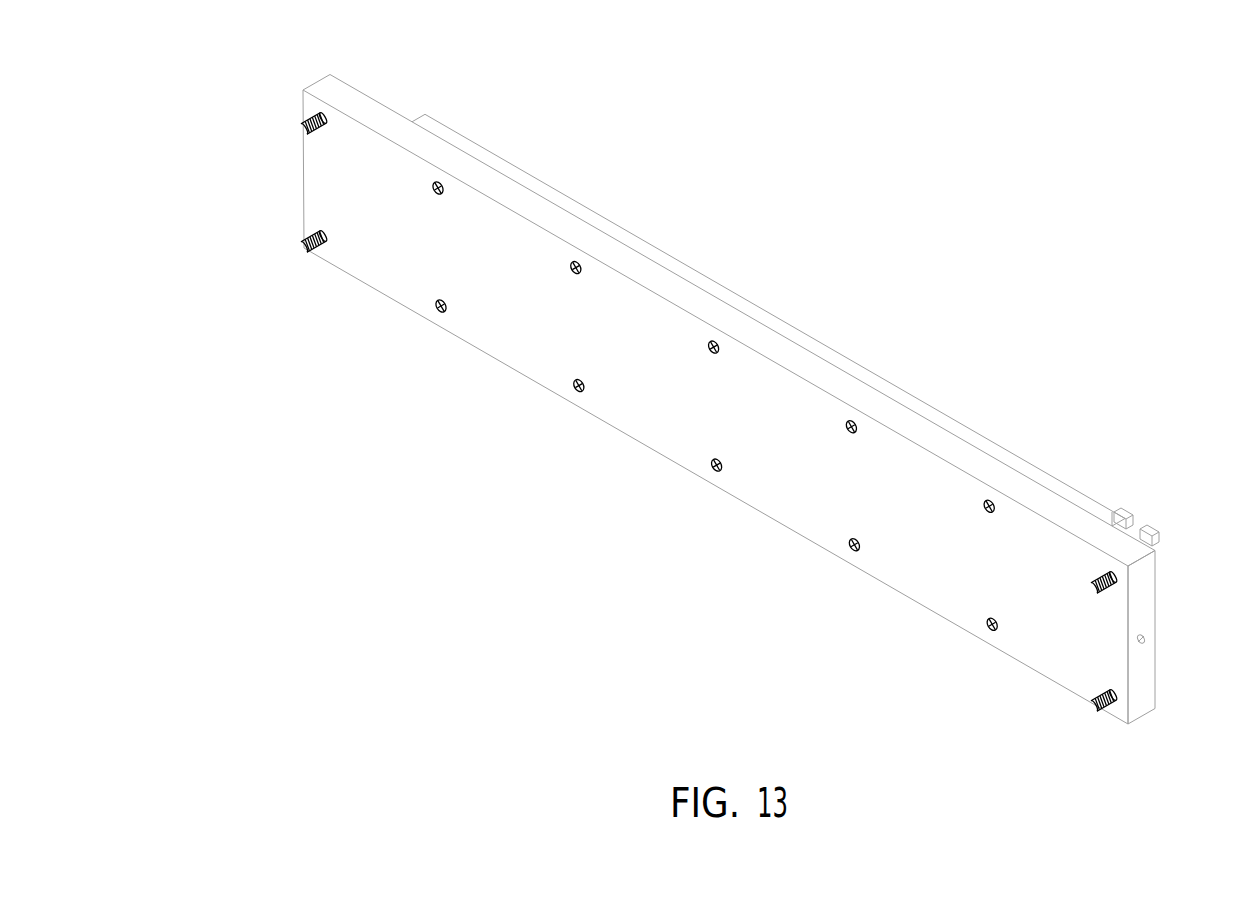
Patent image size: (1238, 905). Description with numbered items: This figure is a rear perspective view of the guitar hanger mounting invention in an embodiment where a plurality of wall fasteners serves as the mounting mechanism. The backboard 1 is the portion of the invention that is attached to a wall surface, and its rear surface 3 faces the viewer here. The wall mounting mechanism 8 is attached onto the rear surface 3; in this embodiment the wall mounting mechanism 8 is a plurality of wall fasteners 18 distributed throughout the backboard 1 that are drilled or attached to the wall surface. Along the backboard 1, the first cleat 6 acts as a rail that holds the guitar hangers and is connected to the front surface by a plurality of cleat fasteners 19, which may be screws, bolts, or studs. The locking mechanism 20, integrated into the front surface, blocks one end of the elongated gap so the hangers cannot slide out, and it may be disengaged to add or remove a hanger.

The backboard 1 is at (327, 86).
The rear surface 3 is at (1023, 650).
The first cleat 6 is at (781, 328).
The wall mounting mechanism 8 is at (205, 216).
The plurality of wall fasteners 18 is at (303, 128).
The plurality of cleat fasteners 19 is at (712, 474).
The locking mechanism 20 is at (1167, 671).